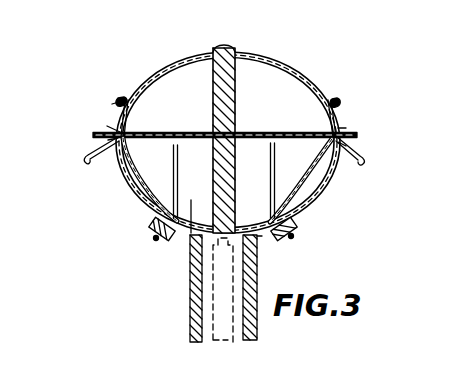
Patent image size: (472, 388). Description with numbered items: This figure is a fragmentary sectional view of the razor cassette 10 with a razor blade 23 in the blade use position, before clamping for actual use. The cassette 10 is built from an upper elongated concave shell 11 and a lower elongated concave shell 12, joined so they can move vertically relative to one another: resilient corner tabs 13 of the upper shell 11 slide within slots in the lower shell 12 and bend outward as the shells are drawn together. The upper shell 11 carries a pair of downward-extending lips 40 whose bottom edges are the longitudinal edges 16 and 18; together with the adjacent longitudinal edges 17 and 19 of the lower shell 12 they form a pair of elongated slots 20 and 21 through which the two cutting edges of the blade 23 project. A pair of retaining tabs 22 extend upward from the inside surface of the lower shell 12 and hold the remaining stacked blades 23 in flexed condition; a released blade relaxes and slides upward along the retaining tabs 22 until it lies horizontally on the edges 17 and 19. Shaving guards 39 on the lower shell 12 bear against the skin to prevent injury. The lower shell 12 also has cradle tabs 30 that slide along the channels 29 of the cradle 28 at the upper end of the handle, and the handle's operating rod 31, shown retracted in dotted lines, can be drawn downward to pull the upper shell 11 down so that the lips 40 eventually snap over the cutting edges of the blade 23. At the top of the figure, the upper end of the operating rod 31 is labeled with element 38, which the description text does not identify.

The cassette 10 is at (331, 86).
The upper elongated concave shell 11 is at (277, 61).
The lower elongated concave shell 12 is at (301, 200).
The resilient corner tabs 13 is at (128, 106).
The longitudinal edge 16 is at (339, 115).
The longitudinal edge 17 is at (343, 145).
The longitudinal edge 18 is at (109, 111).
The longitudinal edge 19 is at (113, 140).
The elongated slot 20 is at (343, 127).
The elongated slot 21 is at (107, 125).
The retaining tabs 22 is at (174, 163).
The blade 23 is at (193, 208).
The cradle 28 is at (259, 238).
The channels 29 is at (156, 240).
The cradle tabs 30 is at (165, 240).
The operating rod 31 is at (236, 89).
The rod cap 38 is at (225, 46).
The shaving guards 39 is at (91, 161).
The lips 40 is at (117, 103).